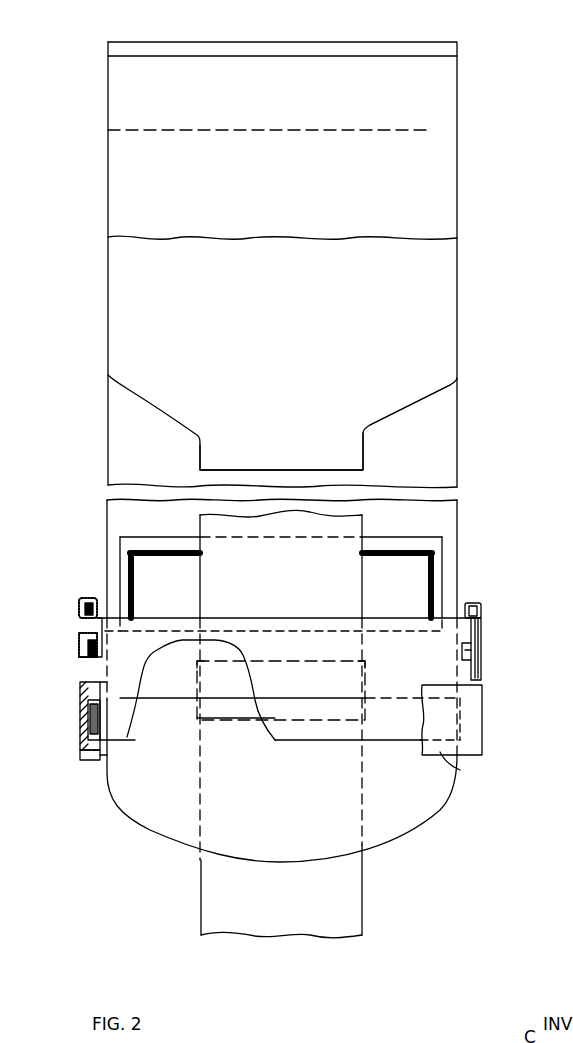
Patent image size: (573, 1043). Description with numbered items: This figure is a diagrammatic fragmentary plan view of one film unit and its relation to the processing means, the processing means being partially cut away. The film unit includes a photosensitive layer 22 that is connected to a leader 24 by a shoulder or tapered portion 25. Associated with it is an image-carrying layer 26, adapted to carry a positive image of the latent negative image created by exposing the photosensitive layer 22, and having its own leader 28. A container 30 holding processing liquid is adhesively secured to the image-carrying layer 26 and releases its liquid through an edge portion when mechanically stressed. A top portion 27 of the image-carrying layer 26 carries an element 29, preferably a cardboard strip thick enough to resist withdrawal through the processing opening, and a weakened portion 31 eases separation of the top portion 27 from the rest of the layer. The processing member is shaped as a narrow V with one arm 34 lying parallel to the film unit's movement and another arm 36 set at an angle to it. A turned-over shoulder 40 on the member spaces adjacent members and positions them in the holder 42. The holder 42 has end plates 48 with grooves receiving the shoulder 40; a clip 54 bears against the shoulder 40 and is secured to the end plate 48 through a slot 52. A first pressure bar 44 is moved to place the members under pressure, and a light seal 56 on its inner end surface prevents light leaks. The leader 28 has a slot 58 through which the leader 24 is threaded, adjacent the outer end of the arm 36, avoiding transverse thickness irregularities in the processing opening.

The photosensitive layer 22 is at (457, 352).
The leader 24 is at (363, 457).
The shoulder or tapered portion 25 is at (400, 410).
The image-carrying layer 26 is at (457, 209).
The top portion 27 is at (457, 98).
The leader 28 is at (155, 823).
The element 29 is at (457, 45).
The container 30 is at (410, 570).
The weakened portion 31 is at (430, 130).
The arm 34 is at (313, 740).
The arm 36 is at (145, 695).
The shoulder 40 is at (93, 627).
The holder 42 is at (483, 718).
The first pressure bar 44 is at (460, 770).
The end plate 48 is at (80, 700).
The slot 52 is at (88, 658).
The clip 54 is at (88, 597).
The light seal 56 is at (80, 745).
The slot 58 is at (197, 725).